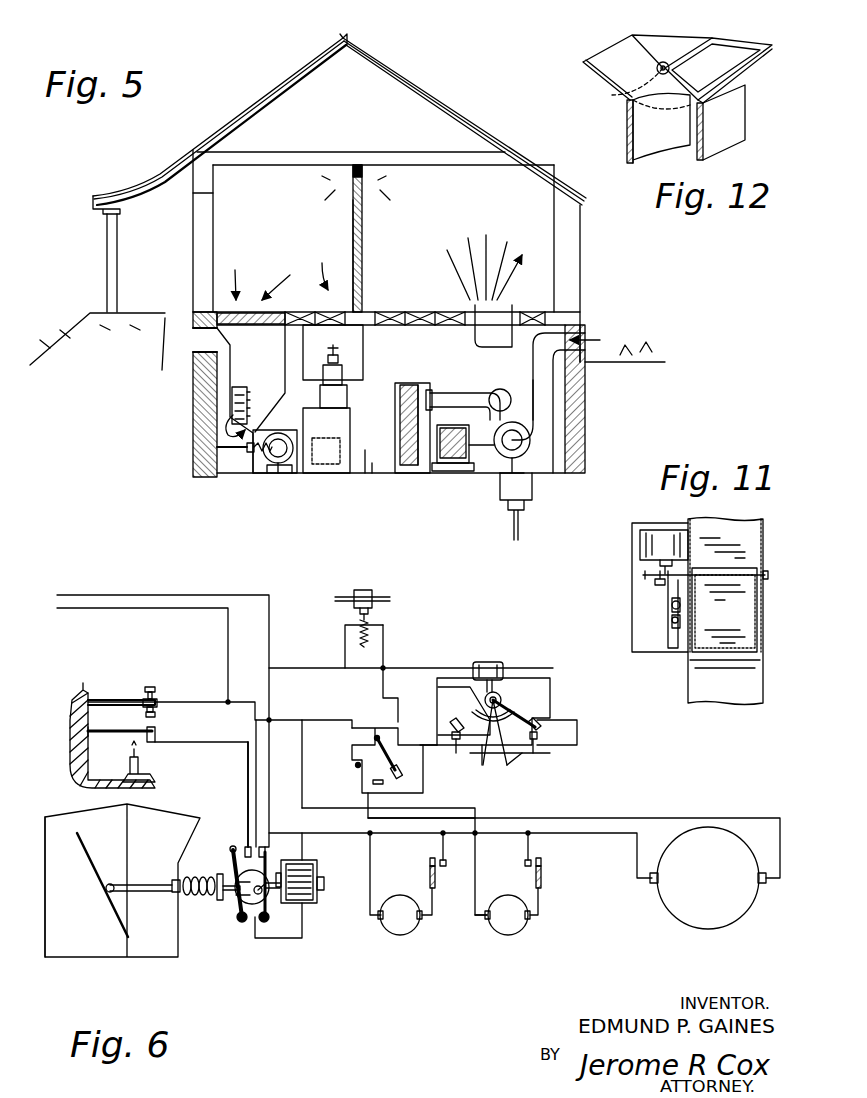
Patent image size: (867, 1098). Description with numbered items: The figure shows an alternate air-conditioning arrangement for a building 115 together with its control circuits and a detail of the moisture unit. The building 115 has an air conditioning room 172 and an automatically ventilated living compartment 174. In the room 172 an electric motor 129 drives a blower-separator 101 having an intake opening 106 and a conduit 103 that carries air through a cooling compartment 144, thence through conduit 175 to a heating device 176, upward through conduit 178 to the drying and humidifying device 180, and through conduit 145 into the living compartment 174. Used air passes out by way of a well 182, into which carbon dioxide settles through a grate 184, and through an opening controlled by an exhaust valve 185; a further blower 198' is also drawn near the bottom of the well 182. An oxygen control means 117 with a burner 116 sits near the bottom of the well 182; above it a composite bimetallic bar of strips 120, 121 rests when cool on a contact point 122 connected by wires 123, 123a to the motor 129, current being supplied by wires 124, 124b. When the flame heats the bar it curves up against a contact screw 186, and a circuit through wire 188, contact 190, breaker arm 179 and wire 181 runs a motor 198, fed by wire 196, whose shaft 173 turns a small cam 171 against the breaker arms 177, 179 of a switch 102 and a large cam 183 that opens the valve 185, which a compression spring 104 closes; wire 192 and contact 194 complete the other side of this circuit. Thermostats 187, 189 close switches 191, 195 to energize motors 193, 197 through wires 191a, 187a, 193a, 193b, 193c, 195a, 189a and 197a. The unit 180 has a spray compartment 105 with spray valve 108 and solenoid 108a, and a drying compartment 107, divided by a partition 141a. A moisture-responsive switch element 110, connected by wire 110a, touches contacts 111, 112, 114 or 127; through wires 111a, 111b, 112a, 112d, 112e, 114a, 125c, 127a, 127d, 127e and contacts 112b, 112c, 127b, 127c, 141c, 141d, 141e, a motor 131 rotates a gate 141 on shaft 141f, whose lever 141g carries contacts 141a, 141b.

In FIG. 5, the blower-separator 101 is at (516, 448).
In FIG. 6, the switch 102 is at (258, 920).
In FIG. 5, the conduit 103 is at (470, 393).
In FIG. 6, the compression spring 104 is at (189, 879).
In FIG. 5, the spray compartment 105 is at (302, 375).
In FIG. 12, the spray compartment 105 is at (622, 52).
In FIG. 5, the intake opening 106 is at (585, 336).
In FIG. 5, the drying compartment 107 is at (362, 310).
In FIG. 12, the drying compartment 107 is at (721, 85).
In FIG. 6, the spray valve 108 is at (357, 594).
In FIG. 6, the solenoid 108a is at (360, 620).
In FIG. 6, the movable switch element 110 is at (382, 760).
In FIG. 6, the wire 110a is at (353, 719).
In FIG. 6, the contact 111 is at (382, 730).
In FIG. 6, the wire 111a is at (383, 645).
In FIG. 6, the wire 111b is at (345, 636).
In FIG. 6, the contact 112 is at (402, 770).
In FIG. 6, the wire 112a is at (548, 742).
In FIG. 6, the contact 112b is at (545, 728).
In FIG. 6, the contact 112c is at (536, 750).
In FIG. 6, the wire 112d is at (555, 720).
In FIG. 6, the wire 112e is at (514, 762).
In FIG. 6, the contact 114 is at (372, 784).
In FIG. 6, the wire 114a is at (416, 800).
In FIG. 5, the building 115 is at (468, 128).
In FIG. 6, the burner 116 is at (142, 770).
In FIG. 5, the oxygen control means 117 is at (232, 405).
In FIG. 6, the strip of high specific expansion metal 120 is at (122, 738).
In FIG. 6, the strip of low specific expansion metal 121 is at (136, 731).
In FIG. 6, the electrical contact point 122 is at (152, 742).
In FIG. 6, the electric wire 123 is at (248, 776).
In FIG. 6, the electric wire 123a is at (692, 815).
In FIG. 6, the electric wire 124 is at (139, 607).
In FIG. 6, the electric wire 124b is at (148, 596).
In FIG. 6, the wire 125c is at (411, 657).
In FIG. 6, the contact 127 is at (356, 764).
In FIG. 6, the wire 127a is at (450, 726).
In FIG. 6, the contact 127b is at (436, 728).
In FIG. 6, the contact 127c is at (462, 750).
In FIG. 6, the wire 127d is at (455, 678).
In FIG. 6, the wire 127e is at (483, 761).
In FIG. 5, the electric motor 129 is at (448, 458).
In FIG. 6, the electric motor 129 is at (666, 864).
In FIG. 5, the motor 131 is at (330, 355).
In FIG. 11, the motor 131 is at (650, 553).
In FIG. 6, the motor 131 is at (500, 678).
In FIG. 5, the gate element 141 is at (342, 372).
In FIG. 12, the gate element 141 is at (690, 62).
In FIG. 11, the gate element 141 is at (752, 622).
In FIG. 5, the partition / contact 141a is at (352, 345).
In FIG. 11, the partition / contact 141a is at (752, 560).
In FIG. 6, the partition / contact 141a is at (505, 700).
In FIG. 11, the contact 141b is at (672, 620).
In FIG. 6, the contact 141b is at (512, 720).
In FIG. 11, the contact 141c is at (682, 605).
In FIG. 6, the contact 141c is at (500, 700).
In FIG. 6, the contact 141d is at (507, 745).
In FIG. 11, the contact 141e is at (683, 621).
In FIG. 6, the contact 141e is at (497, 750).
In FIG. 11, the shaft 141f is at (769, 575).
In FIG. 11, the lever 141g is at (672, 640).
In FIG. 6, the lever 141g is at (527, 723).
In FIG. 5, the cooling compartment 144 is at (408, 400).
In FIG. 5, the conduit 145 is at (462, 348).
In FIG. 6, the small cam 171 is at (250, 895).
In FIG. 5, the air conditioning room 172 is at (553, 446).
In FIG. 6, the shaft 173 is at (266, 892).
In FIG. 5, the living compartment 174 is at (545, 240).
In FIG. 5, the conduit 175 is at (368, 473).
In FIG. 5, the heating device 176 is at (312, 433).
In FIG. 6, the breaker arm 177 is at (233, 858).
In FIG. 5, the conduit 178 is at (347, 397).
In FIG. 12, the conduit 178 is at (642, 131).
In FIG. 11, the conduit 178 is at (752, 688).
In FIG. 6, the breaker arm 179 is at (268, 847).
In FIG. 5, the drying and humidifying device 180 is at (350, 305).
In FIG. 11, the drying and humidifying device 180 is at (766, 526).
In FIG. 6, the wire 181 is at (293, 896).
In FIG. 5, the well 182 is at (278, 282).
In FIG. 6, the well 182 is at (160, 930).
In FIG. 6, the large cam 183 is at (237, 893).
In FIG. 5, the grate 184 is at (228, 312).
In FIG. 5, the exhaust valve 185 is at (228, 442).
In FIG. 6, the exhaust valve 185 is at (92, 866).
In FIG. 6, the electrical contact screw 186 is at (145, 690).
In FIG. 6, the thermostat 187 is at (542, 874).
In FIG. 6, the wire 187a is at (540, 903).
In FIG. 6, the electric wire 188 is at (200, 704).
In FIG. 6, the thermostat 189 is at (436, 877).
In FIG. 6, the wire 189a is at (433, 905).
In FIG. 6, the electric contact 190 is at (270, 833).
In FIG. 6, the switch 191 is at (540, 860).
In FIG. 6, the wire 191a is at (526, 848).
In FIG. 6, the wire 192 is at (248, 827).
In FIG. 6, the motor 193 is at (520, 921).
In FIG. 6, the wire 193a is at (476, 870).
In FIG. 6, the wire 193b is at (460, 808).
In FIG. 6, the wire 193c is at (296, 718).
In FIG. 6, the electric contact 194 is at (255, 847).
In FIG. 6, the switch 195 is at (428, 862).
In FIG. 6, the wire 195a is at (441, 848).
In FIG. 6, the electric wire 196 is at (302, 858).
In FIG. 6, the motor 197 is at (412, 921).
In FIG. 6, the wire 197a is at (371, 868).
In FIG. 6, the electric motor 198 is at (319, 881).
In FIG. 5, the blower 198' is at (267, 465).